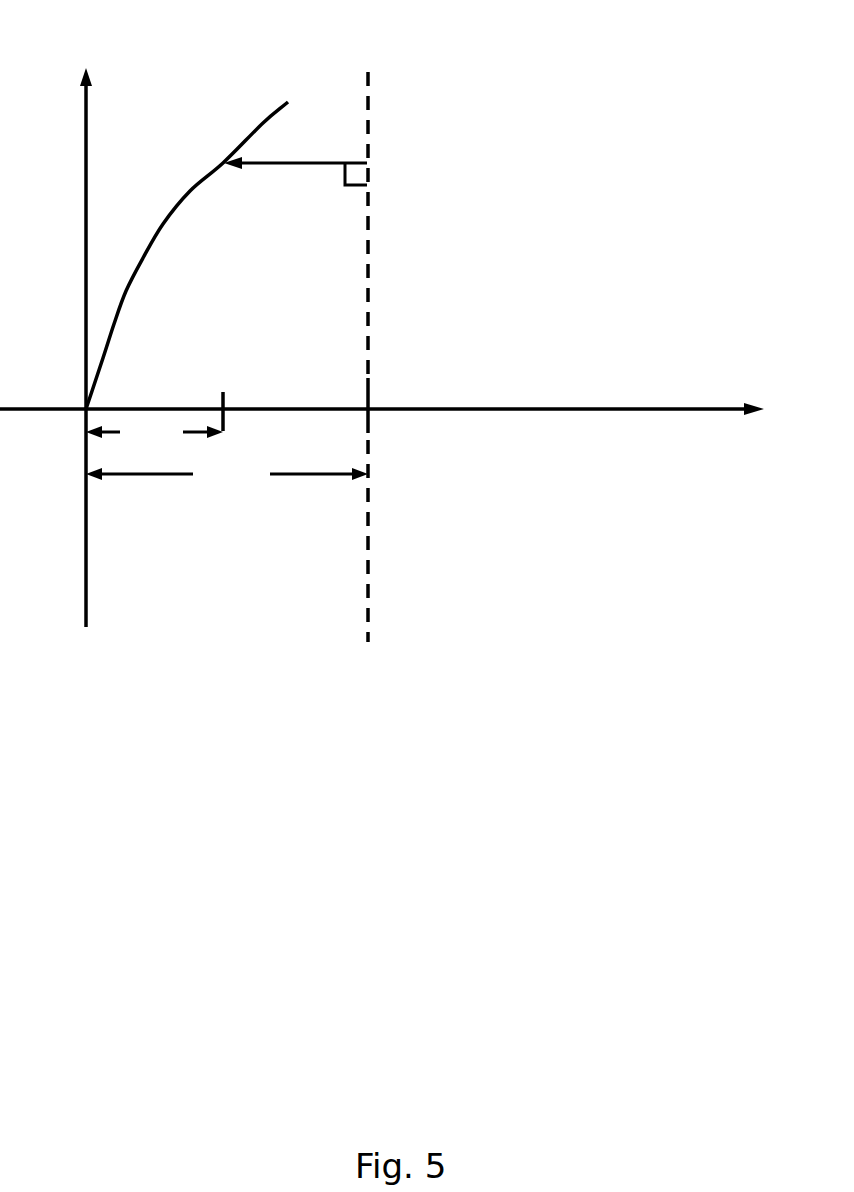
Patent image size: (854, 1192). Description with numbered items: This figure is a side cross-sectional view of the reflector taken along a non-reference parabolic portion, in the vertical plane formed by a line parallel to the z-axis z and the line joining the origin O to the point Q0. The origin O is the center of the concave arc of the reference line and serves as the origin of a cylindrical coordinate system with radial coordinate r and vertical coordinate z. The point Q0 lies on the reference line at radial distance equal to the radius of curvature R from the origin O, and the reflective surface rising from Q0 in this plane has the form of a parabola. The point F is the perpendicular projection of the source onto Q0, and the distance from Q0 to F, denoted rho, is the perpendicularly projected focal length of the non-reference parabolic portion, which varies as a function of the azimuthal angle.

The z-axis z is at (102, 324).
The radial coordinate r is at (382, 289).
The origin O is at (390, 357).
The center point of non-reference parabolic portion Q0 is at (158, 284).
The perpendicularly projected point F is at (244, 391).
The perpendicularly projected focal length rho is at (154, 437).
The radius of curvature R is at (227, 471).